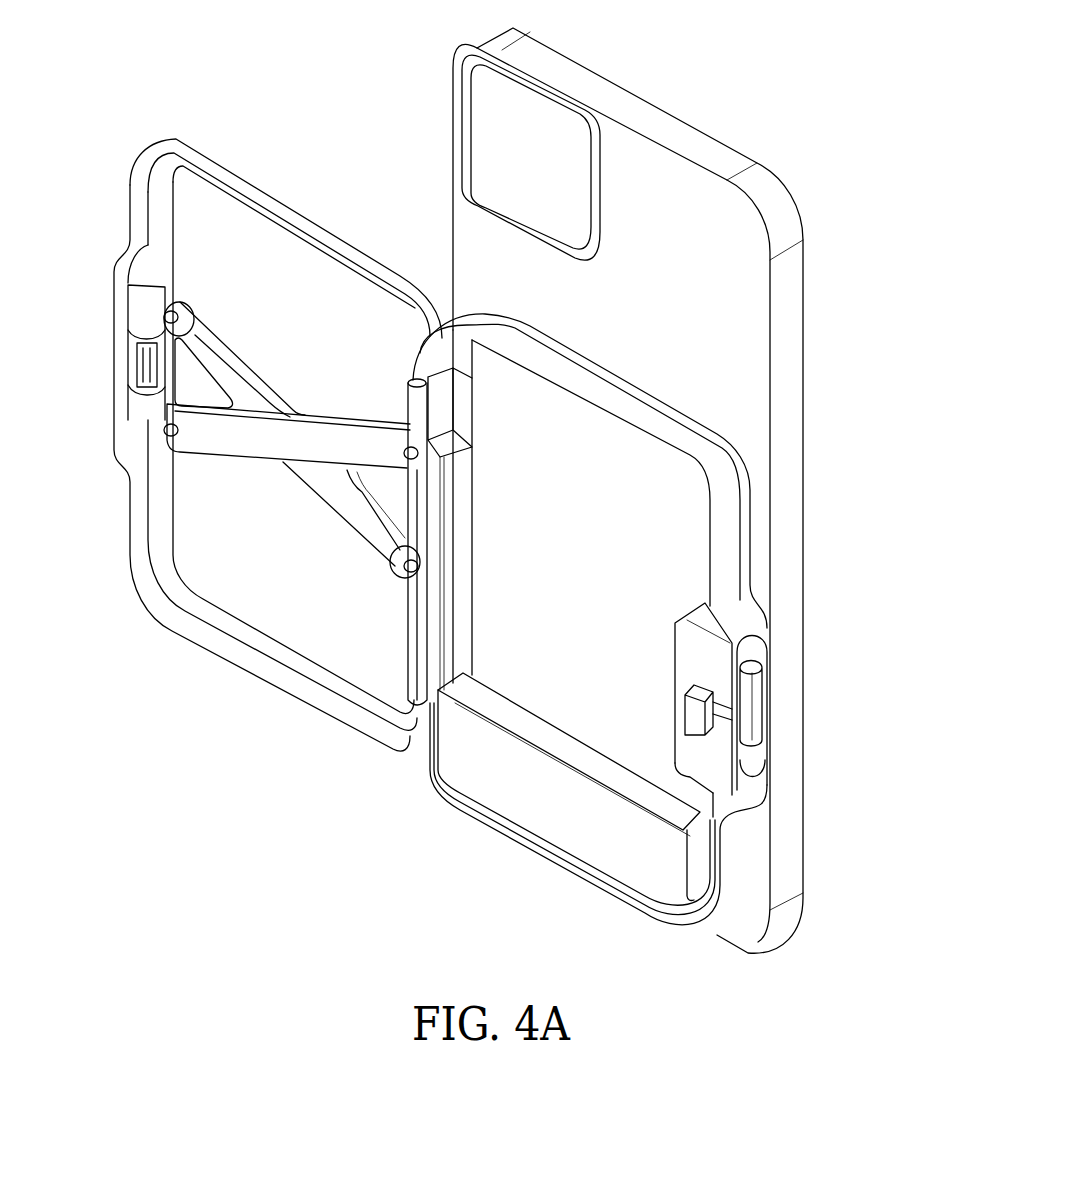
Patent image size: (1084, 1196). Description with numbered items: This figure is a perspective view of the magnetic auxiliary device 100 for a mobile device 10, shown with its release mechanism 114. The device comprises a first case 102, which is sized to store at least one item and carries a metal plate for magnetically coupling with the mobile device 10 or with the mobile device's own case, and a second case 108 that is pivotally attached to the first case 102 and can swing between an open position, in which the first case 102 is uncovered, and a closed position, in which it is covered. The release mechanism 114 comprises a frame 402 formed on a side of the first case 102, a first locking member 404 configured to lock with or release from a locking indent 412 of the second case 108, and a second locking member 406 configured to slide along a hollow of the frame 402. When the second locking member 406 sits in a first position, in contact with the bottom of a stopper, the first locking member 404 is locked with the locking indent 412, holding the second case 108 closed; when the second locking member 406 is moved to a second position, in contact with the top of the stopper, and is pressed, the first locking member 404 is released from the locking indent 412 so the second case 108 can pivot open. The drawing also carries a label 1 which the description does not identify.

The electronic device assembly 1 is at (528, 552).
The mobile device 10 is at (660, 118).
The magnetic auxiliary device 100 is at (688, 952).
The first case 102 is at (478, 312).
The second case 108 is at (267, 197).
The release mechanism 114 is at (895, 648).
The frame 402 is at (710, 653).
The first locking member 404 is at (695, 727).
The second locking member 406 is at (757, 707).
The locking indent 412 is at (128, 358).